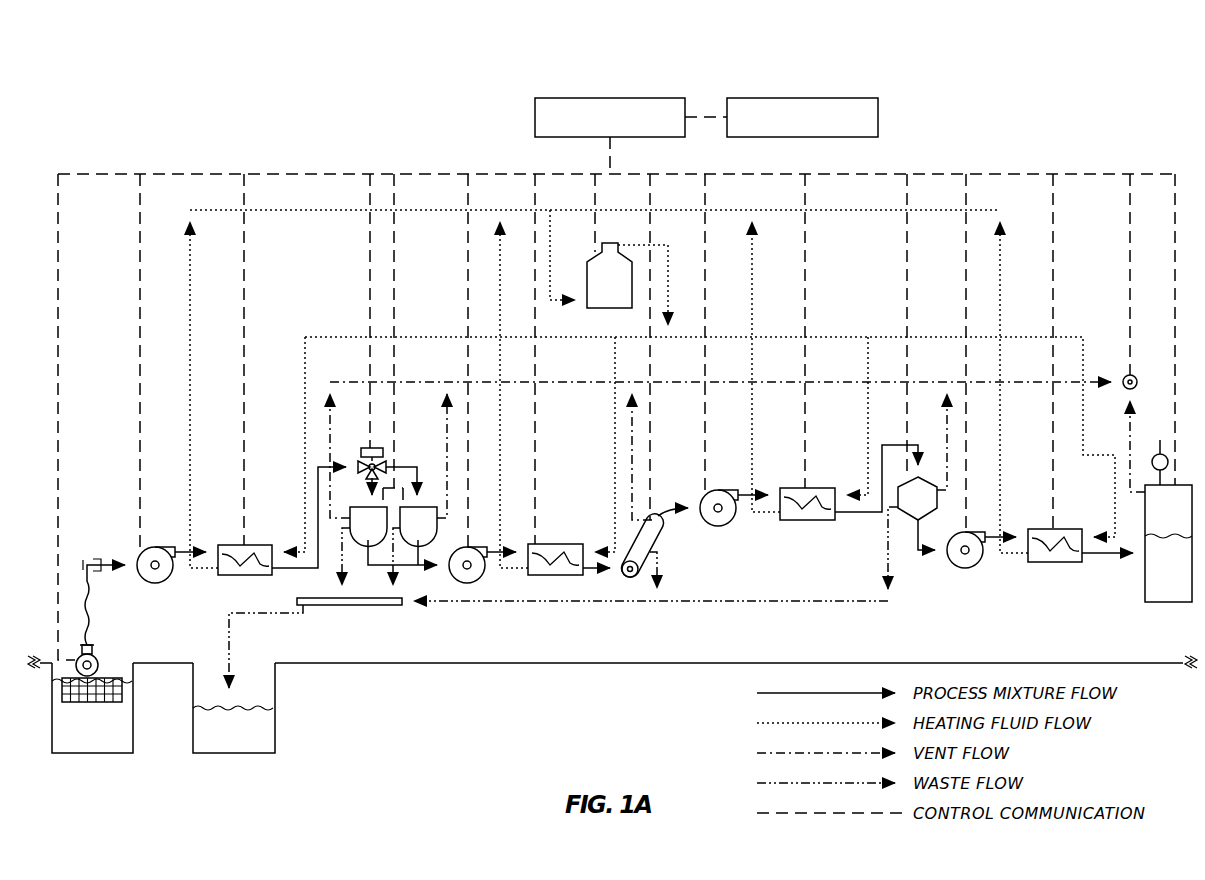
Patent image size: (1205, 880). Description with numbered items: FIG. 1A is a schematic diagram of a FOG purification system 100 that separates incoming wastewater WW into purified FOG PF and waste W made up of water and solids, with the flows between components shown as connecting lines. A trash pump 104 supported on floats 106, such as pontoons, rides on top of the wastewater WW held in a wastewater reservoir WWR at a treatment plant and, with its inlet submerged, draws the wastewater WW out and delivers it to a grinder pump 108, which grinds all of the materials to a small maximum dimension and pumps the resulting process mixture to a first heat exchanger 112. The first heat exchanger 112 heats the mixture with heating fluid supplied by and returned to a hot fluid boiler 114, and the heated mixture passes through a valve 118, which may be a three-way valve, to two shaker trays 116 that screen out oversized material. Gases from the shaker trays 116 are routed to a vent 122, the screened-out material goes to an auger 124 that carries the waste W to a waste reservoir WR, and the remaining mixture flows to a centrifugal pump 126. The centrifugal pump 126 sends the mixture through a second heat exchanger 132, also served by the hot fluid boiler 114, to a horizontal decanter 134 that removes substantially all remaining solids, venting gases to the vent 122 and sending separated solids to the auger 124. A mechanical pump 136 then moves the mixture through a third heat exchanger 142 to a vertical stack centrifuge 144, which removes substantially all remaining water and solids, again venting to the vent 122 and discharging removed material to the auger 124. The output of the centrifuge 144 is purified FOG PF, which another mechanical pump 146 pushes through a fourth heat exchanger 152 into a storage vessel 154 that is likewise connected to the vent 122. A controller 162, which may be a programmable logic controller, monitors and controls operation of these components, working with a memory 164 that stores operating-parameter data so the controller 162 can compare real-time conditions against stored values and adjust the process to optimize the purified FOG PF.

The FOG purification system 100 is at (121, 78).
The trash pump 104 is at (98, 654).
The floats 106 is at (110, 676).
The grinder pump 108 is at (150, 584).
The first heat exchanger 112 is at (243, 577).
The hot fluid boiler 114 is at (609, 267).
The shaker trays 116 is at (393, 527).
The valve 118 is at (385, 456).
The vent 122 is at (373, 607).
The auger 124 is at (1128, 374).
The centrifugal pump 126 is at (478, 583).
The second heat exchanger 132 is at (558, 576).
The decanter 134 is at (656, 540).
The mechanical pump 136 is at (723, 526).
The third heat exchanger 142 is at (808, 521).
The centrifuge 144 is at (917, 498).
The mechanical pump 146 is at (968, 568).
The fourth heat exchanger 152 is at (1055, 564).
The storage vessel 154 is at (1152, 542).
The controller 162 is at (535, 113).
The memory 164 is at (878, 113).
The wastewater WW is at (103, 732).
The wastewater reservoir WWR is at (80, 755).
The waste W is at (258, 732).
The waste reservoir WR is at (232, 755).
The purified FOG PF is at (1160, 583).